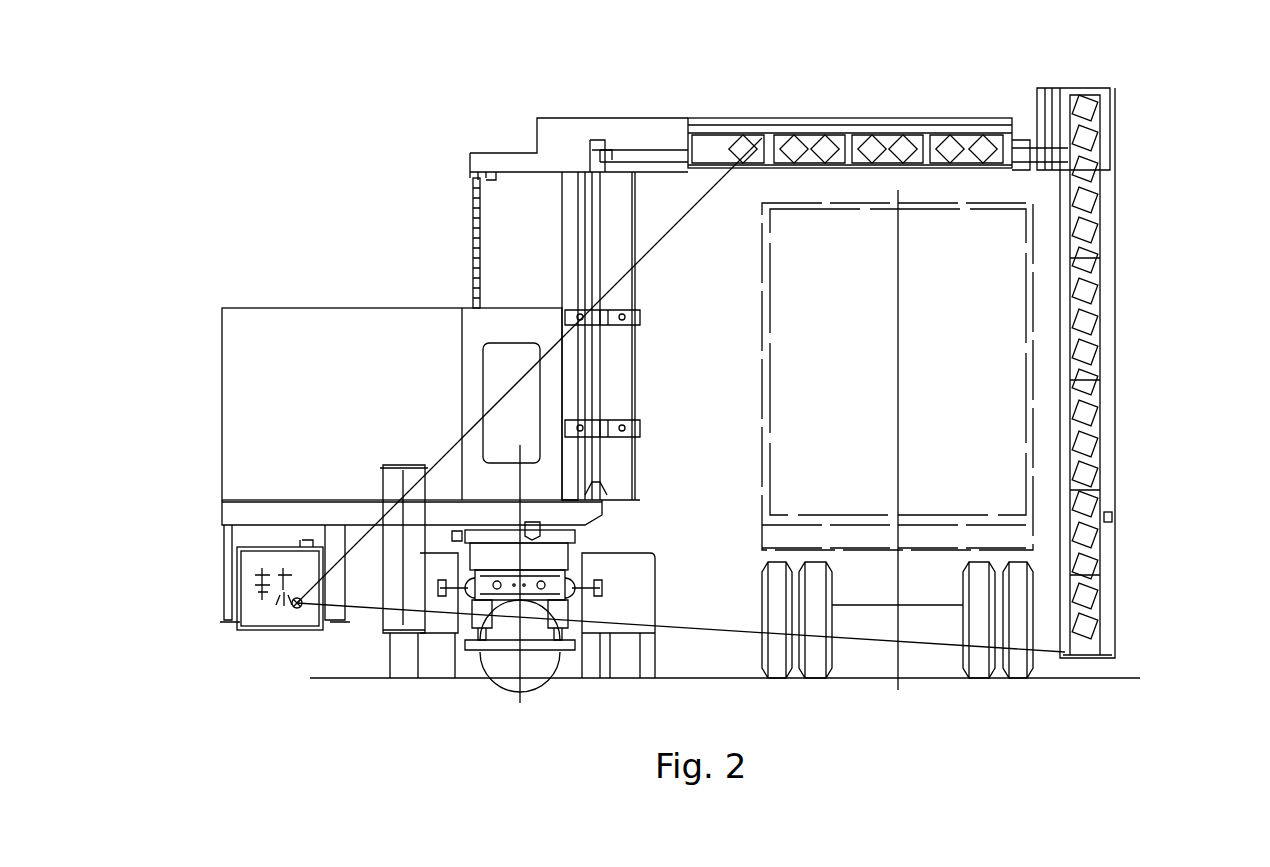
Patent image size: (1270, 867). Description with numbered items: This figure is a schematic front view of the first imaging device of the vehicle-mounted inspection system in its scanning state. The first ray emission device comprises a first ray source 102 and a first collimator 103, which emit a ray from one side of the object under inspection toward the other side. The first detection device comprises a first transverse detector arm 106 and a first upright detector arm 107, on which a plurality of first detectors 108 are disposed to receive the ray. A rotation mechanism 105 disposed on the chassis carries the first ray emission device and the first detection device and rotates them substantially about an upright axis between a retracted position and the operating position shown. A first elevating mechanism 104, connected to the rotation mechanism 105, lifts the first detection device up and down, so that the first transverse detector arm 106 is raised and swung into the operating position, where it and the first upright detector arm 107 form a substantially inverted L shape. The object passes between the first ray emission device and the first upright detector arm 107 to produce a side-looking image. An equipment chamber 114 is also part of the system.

The first ray source 102 is at (273, 600).
The first collimator 103 is at (402, 557).
The first elevating mechanism 104 is at (593, 388).
The rotation mechanism 105 is at (503, 523).
The first transverse detector arm 106 is at (735, 122).
The first upright detector arm 107 is at (1097, 99).
The first detectors 108 is at (1090, 262).
The equipment chamber 114 is at (270, 388).